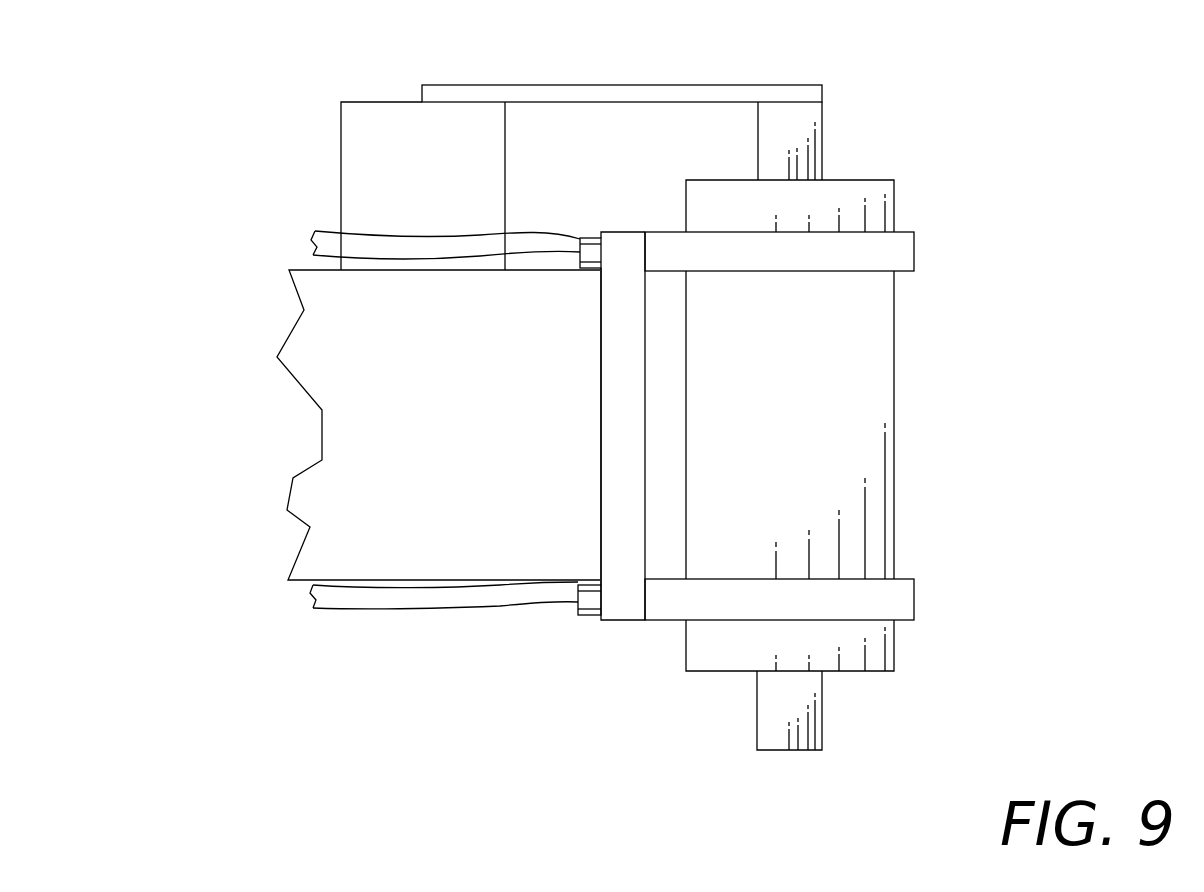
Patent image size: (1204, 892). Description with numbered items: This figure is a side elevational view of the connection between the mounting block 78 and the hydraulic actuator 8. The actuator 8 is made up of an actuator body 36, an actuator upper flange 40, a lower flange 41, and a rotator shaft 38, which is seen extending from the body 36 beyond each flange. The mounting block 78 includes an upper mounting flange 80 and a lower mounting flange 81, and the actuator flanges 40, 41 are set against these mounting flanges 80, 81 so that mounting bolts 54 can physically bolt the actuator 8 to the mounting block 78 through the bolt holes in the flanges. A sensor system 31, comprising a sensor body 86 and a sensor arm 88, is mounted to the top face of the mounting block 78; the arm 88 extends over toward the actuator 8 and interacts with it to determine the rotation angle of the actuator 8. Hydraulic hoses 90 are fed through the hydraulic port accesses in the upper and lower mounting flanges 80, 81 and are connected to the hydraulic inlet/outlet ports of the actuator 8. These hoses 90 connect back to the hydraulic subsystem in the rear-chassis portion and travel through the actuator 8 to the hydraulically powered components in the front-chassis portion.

The hydraulic actuator 8 is at (990, 248).
The sensor system 31 is at (372, 68).
The actuator body 36 is at (894, 420).
The rotator shaft 38 is at (822, 125).
The actuator upper flange 40 is at (672, 259).
The lower flange 41 is at (687, 592).
The mounting bolts 54 is at (592, 238).
The mounting block 78 is at (272, 633).
The upper mounting flange 80 is at (626, 256).
The lower mounting flange 81 is at (625, 592).
The sensor body 86 is at (341, 100).
The sensor arm 88 is at (543, 83).
The hydraulic hoses 90 is at (341, 240).